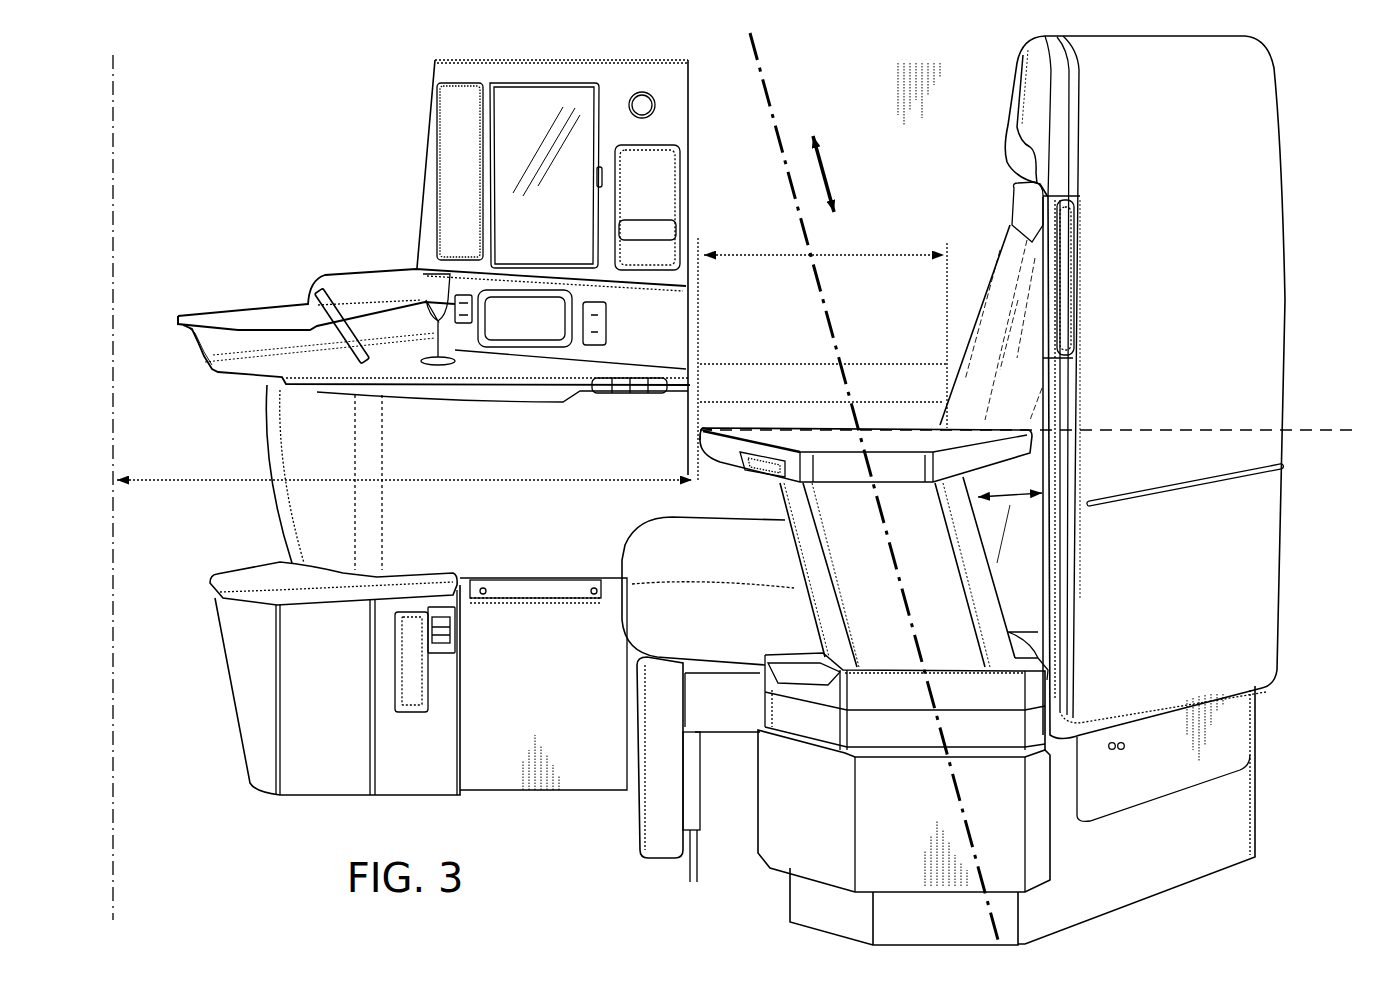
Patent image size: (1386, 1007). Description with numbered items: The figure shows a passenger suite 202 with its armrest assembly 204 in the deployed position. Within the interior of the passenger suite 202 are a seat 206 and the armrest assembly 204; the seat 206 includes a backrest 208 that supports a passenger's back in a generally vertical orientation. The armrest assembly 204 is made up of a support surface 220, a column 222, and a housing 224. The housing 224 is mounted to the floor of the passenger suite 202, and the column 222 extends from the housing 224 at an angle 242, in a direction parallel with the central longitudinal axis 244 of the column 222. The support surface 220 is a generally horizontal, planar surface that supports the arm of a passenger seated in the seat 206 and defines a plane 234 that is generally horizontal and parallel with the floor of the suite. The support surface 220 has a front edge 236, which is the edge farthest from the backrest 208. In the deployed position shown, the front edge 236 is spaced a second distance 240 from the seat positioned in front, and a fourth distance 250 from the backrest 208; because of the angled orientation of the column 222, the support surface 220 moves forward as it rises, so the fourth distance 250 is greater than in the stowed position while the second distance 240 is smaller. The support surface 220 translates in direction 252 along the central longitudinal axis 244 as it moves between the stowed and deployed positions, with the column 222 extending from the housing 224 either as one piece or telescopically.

The passenger suite 202 is at (351, 102).
The armrest assembly 204 is at (678, 886).
The seat 206 is at (906, 348).
The backrest 208 is at (1010, 242).
The support surface 220 is at (795, 442).
The column 222 is at (810, 557).
The housing 224 is at (792, 857).
The plane 234 is at (1322, 429).
The front edge 236 is at (694, 437).
The second distance 240 is at (216, 480).
The angle 242 is at (1008, 492).
The central longitudinal axis 244 is at (780, 112).
The fourth distance 250 is at (875, 252).
The direction 252 is at (838, 174).